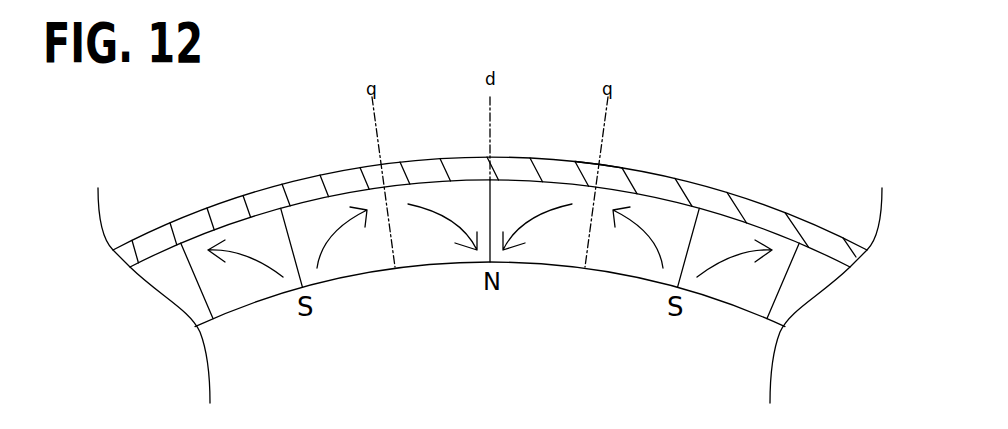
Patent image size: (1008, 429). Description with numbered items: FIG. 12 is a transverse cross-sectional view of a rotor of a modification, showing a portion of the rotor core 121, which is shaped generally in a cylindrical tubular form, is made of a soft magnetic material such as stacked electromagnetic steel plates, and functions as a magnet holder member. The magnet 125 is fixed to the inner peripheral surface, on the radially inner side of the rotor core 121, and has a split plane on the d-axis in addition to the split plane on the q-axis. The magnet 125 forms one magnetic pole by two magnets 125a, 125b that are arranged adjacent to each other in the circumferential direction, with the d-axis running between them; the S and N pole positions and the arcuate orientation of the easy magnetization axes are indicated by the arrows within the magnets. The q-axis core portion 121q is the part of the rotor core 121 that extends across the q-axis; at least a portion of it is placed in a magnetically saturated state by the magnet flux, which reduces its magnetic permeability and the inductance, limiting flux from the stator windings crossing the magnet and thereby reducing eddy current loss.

The rotor core 121 is at (331, 173).
The q-axis core portion 121q is at (607, 178).
The magnet 125 is at (490, 286).
The magnet 125a is at (455, 263).
The magnet 125b is at (601, 274).